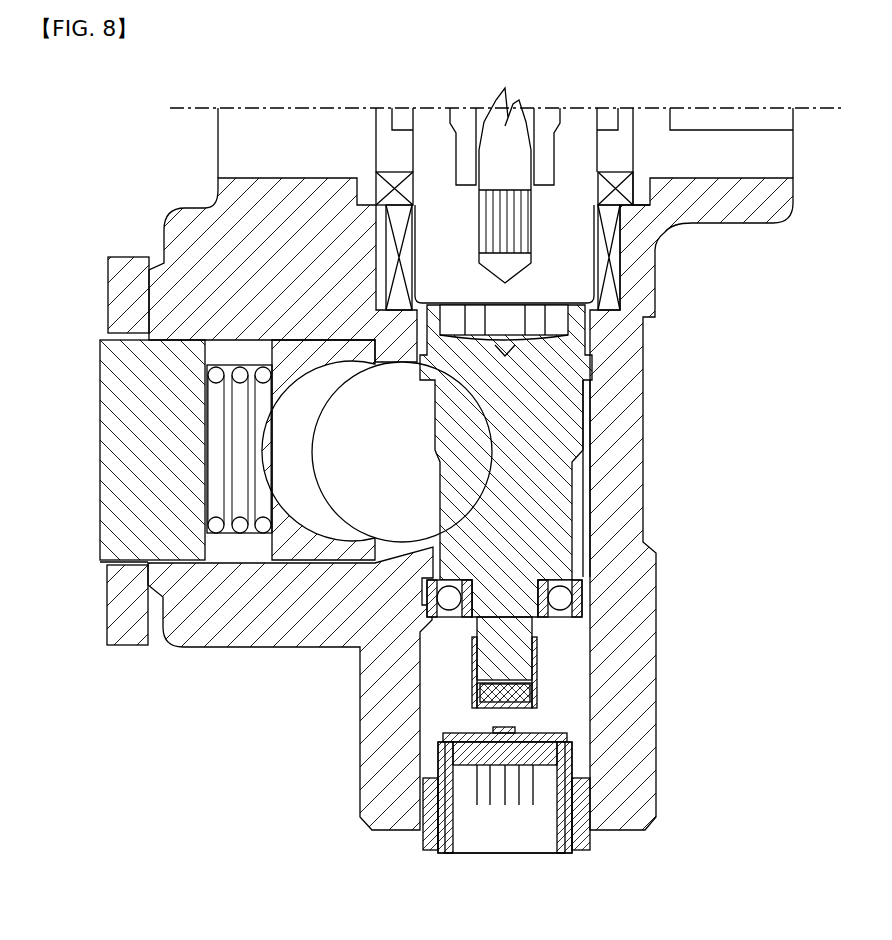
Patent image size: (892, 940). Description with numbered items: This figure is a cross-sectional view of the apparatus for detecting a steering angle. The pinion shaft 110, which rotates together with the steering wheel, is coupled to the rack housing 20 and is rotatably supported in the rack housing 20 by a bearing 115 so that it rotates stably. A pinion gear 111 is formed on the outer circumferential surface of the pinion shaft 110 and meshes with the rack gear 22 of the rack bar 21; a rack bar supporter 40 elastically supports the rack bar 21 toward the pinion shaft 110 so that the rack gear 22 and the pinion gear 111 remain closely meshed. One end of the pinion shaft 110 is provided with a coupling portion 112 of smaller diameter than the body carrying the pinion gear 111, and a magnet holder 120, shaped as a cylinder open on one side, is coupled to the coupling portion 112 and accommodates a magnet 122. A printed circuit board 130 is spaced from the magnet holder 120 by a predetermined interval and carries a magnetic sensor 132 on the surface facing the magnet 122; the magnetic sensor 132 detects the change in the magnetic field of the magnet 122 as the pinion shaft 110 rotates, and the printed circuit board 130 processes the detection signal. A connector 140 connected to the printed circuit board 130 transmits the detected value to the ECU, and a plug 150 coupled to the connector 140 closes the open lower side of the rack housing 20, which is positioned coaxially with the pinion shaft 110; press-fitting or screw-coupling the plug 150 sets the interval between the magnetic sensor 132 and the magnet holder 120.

The rack housing 20 is at (213, 645).
The rack bar 21 is at (350, 493).
The rack gear 22 is at (463, 410).
The rack bar supporter 40 is at (94, 413).
The pinion shaft 110 is at (576, 505).
The pinion gear 111 is at (555, 477).
The coupling portion 112 is at (527, 632).
The bearing 115 is at (577, 592).
The magnet holder 120 is at (535, 677).
The magnet 122 is at (530, 690).
The printed circuit board 130 is at (567, 738).
The magnetic sensor 132 is at (517, 723).
The connector 140 is at (575, 763).
The plug 150 is at (580, 800).